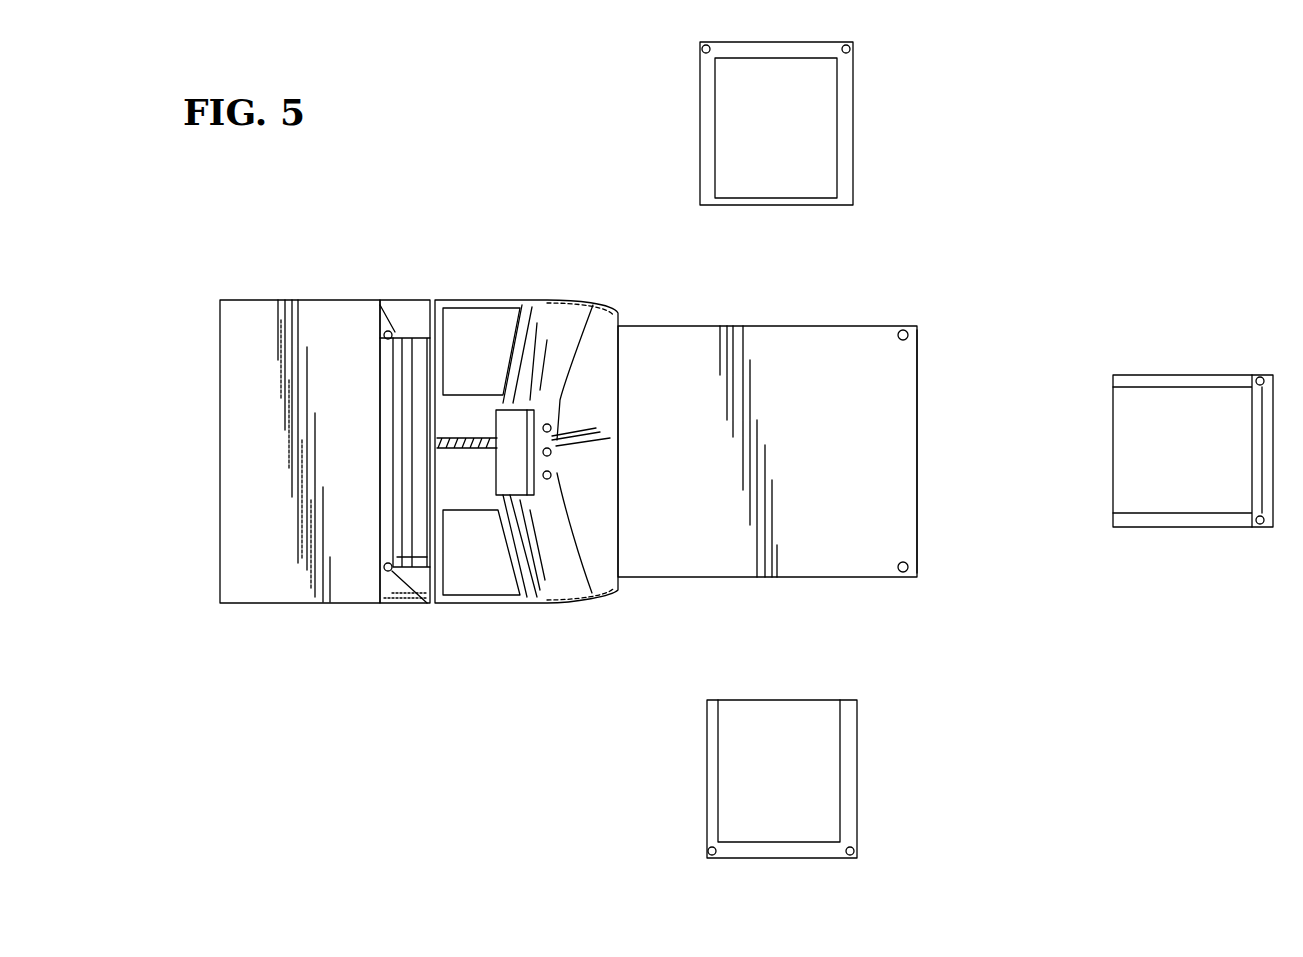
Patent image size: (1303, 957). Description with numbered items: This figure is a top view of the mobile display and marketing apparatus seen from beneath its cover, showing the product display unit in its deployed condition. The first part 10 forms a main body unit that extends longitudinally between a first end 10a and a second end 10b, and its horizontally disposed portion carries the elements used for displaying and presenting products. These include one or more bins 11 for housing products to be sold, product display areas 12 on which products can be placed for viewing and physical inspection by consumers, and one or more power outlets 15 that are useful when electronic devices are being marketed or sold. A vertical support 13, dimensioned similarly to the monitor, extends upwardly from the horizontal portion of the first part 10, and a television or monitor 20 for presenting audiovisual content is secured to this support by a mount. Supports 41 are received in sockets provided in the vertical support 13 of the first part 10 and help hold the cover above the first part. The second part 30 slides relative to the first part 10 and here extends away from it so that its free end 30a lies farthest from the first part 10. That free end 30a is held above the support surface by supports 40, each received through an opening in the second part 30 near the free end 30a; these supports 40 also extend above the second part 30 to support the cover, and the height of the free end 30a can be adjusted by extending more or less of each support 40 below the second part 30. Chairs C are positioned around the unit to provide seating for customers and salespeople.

The first part 10 is at (340, 605).
The first end 10a is at (220, 582).
The second end 10b is at (647, 577).
The bin 11 is at (467, 350).
The product display area 12 is at (570, 372).
The vertical support 13 is at (403, 605).
The power outlet 15 is at (551, 475).
The monitor 20 is at (403, 330).
The second part 30 is at (840, 350).
The free end 30a is at (920, 458).
The support 40 is at (913, 340).
The support 41 is at (390, 335).
The chair C is at (852, 138).